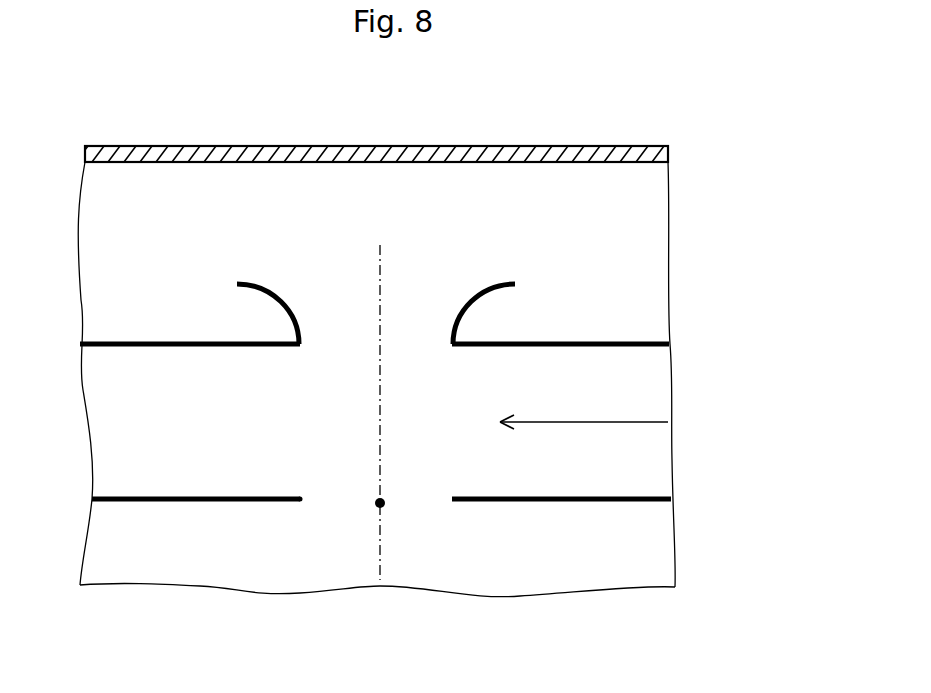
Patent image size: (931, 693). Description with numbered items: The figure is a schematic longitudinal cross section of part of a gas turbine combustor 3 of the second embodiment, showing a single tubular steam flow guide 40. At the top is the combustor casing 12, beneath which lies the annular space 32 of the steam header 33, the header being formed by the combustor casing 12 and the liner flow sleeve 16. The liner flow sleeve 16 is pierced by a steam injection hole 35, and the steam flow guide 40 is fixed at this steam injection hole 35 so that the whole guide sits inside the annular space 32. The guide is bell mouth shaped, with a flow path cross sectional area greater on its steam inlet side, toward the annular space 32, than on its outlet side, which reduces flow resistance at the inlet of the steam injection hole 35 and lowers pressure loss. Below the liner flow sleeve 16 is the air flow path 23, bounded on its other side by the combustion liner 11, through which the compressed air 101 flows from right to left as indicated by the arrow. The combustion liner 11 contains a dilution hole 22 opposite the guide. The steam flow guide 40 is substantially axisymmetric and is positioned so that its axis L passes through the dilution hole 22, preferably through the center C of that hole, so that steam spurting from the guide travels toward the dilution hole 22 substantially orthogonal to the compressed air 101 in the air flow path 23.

The gas turbine combustor 3 is at (716, 125).
The combustor casing 12 is at (582, 156).
The steam header 33 is at (389, 143).
The liner flow sleeve 16 is at (643, 343).
The steam injection hole 35 is at (300, 342).
The steam flow guide 40 is at (500, 283).
The annular space 32 is at (592, 258).
The air flow path 23 is at (229, 432).
The compressed air 101 is at (595, 420).
The combustion liner 11 is at (653, 499).
The dilution hole 22 is at (300, 499).
The axis L is at (380, 553).
The center C is at (384, 505).